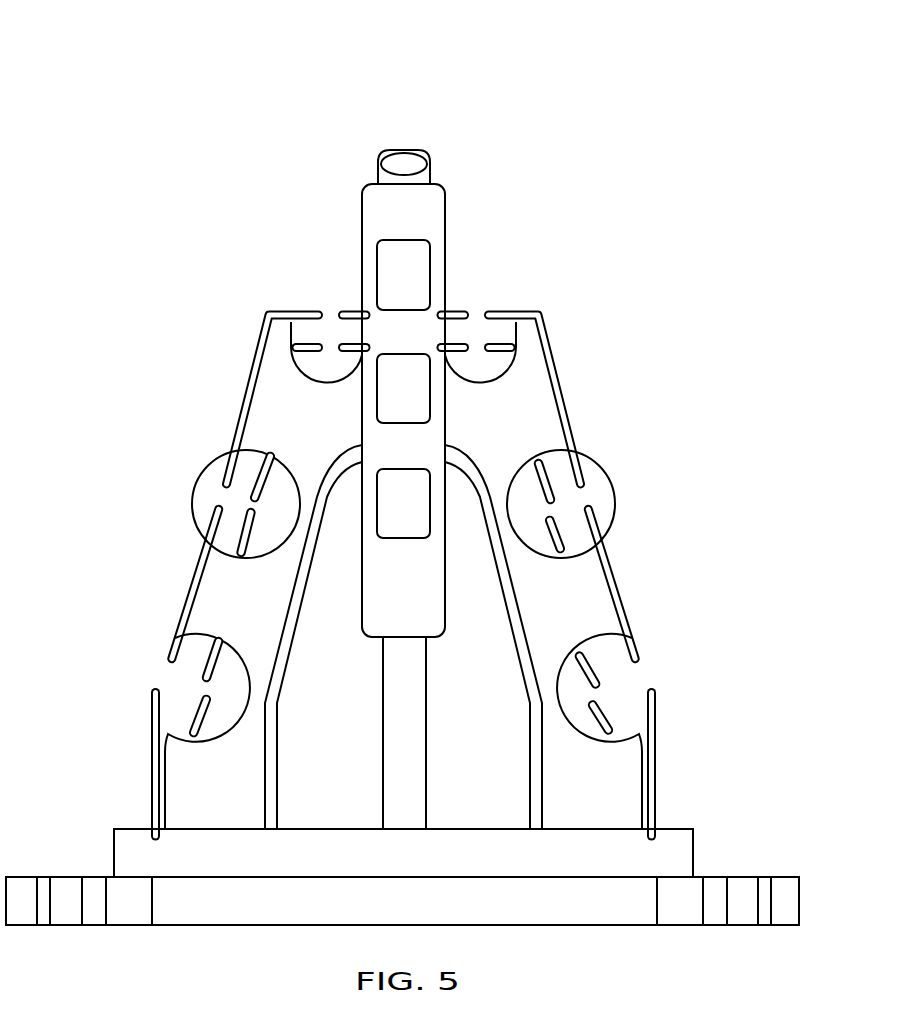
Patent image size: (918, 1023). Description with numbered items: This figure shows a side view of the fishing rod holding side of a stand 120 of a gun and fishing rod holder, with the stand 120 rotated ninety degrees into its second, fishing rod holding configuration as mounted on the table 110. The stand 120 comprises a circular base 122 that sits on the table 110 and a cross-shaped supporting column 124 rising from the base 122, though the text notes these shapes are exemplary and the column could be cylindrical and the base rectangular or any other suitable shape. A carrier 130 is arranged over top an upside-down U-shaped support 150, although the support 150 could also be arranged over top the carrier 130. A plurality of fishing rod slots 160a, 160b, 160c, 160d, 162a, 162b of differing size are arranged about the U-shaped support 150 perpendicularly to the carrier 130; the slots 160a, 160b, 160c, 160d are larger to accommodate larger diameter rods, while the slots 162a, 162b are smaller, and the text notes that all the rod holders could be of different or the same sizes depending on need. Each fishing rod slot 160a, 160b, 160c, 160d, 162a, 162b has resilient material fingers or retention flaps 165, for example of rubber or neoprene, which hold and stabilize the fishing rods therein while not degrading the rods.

The table 110 is at (133, 912).
The stand 120 is at (128, 74).
The base 122 is at (131, 838).
The supporting column 124 is at (523, 775).
The carrier 130 is at (412, 136).
The support 150 is at (214, 328).
The fishing rod slot 160a is at (168, 622).
The fishing rod slot 160b is at (218, 437).
The fishing rod slot 160c is at (590, 443).
The fishing rod slot 160d is at (638, 630).
The fishing rod slot 162a is at (355, 265).
The fishing rod slot 162b is at (548, 265).
The retention flaps 165 is at (317, 334).